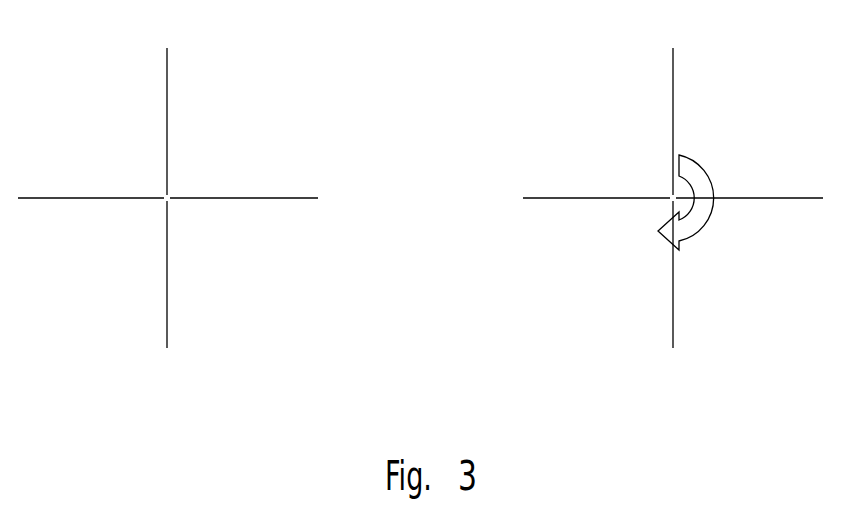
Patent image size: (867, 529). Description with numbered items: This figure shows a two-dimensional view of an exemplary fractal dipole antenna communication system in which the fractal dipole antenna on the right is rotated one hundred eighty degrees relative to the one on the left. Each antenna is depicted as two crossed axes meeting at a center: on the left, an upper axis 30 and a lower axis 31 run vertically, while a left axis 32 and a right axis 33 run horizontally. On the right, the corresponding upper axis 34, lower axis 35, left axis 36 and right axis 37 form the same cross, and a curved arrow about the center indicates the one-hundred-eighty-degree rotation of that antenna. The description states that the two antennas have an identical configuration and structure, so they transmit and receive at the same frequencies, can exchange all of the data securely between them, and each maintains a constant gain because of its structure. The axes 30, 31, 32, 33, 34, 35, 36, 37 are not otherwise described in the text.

The upper half of first axis 30 is at (167, 77).
The lower half of first axis 31 is at (167, 322).
The left half of second axis 32 is at (50, 197).
The right half of second axis 33 is at (288, 200).
The upper half of first axis (rotated system) 34 is at (673, 77).
The lower half of first axis (rotated system) 35 is at (673, 322).
The left half of second axis (rotated system) 36 is at (555, 197).
The right half of second axis (rotated system) 37 is at (795, 200).